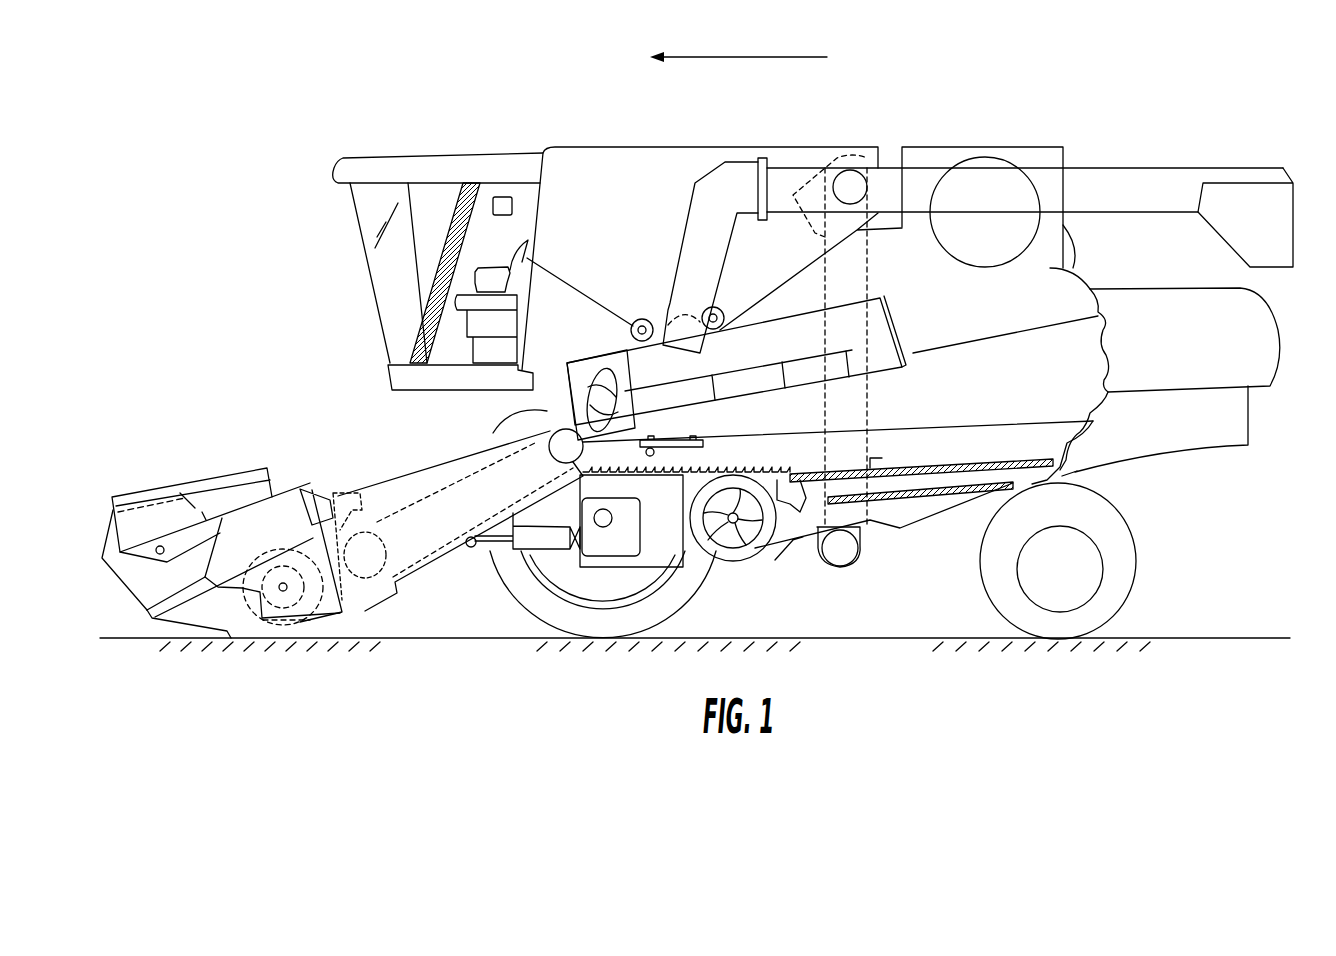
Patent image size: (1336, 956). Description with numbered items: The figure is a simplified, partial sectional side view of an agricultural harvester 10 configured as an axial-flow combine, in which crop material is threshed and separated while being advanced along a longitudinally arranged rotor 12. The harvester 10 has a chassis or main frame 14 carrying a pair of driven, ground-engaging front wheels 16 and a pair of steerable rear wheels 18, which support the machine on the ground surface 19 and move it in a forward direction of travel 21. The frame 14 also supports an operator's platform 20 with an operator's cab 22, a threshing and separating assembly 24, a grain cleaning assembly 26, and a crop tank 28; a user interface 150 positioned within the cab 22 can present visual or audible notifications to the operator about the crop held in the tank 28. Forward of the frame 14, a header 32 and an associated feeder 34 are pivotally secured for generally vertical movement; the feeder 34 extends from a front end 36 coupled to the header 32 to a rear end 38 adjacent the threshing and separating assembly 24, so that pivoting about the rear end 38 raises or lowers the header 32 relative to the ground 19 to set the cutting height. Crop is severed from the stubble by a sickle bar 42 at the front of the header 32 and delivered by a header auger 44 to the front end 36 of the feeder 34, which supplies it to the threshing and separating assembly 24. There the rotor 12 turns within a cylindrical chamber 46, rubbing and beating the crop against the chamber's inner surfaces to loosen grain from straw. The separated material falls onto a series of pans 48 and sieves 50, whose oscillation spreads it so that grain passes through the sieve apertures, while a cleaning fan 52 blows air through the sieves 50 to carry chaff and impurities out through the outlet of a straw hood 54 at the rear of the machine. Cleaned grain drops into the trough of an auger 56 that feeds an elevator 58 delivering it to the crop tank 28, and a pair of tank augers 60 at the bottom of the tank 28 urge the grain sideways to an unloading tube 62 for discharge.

The agricultural harvester 10 is at (395, 108).
The rotor 12 is at (598, 352).
The main frame 14 is at (1077, 472).
The front wheels 16 is at (542, 603).
The rear wheels 18 is at (1125, 575).
The ground surface 19 is at (128, 638).
The operator's platform 20 is at (400, 378).
The forward direction of travel 21 is at (761, 56).
The operator's cab 22 is at (382, 267).
The threshing and separating assembly 24 is at (762, 358).
The grain cleaning assembly 26 is at (804, 568).
The crop tank 28 is at (635, 147).
The header 32 is at (154, 470).
The feeder 34 is at (368, 455).
The front end of feeder 36 is at (308, 537).
The rear end of feeder 38 is at (545, 413).
The sickle bar 42 is at (160, 630).
The header auger 44 is at (306, 648).
The cylindrical chamber 46 is at (783, 322).
The pans 48 is at (743, 470).
The sieves 50 is at (873, 468).
The cleaning fan 52 is at (728, 553).
The straw hood 54 is at (1267, 352).
The auger 56 is at (843, 553).
The elevator 58 is at (870, 252).
The tank augers 60 is at (648, 320).
The unloading tube 62 is at (1125, 183).
The user interface 150 is at (497, 195).